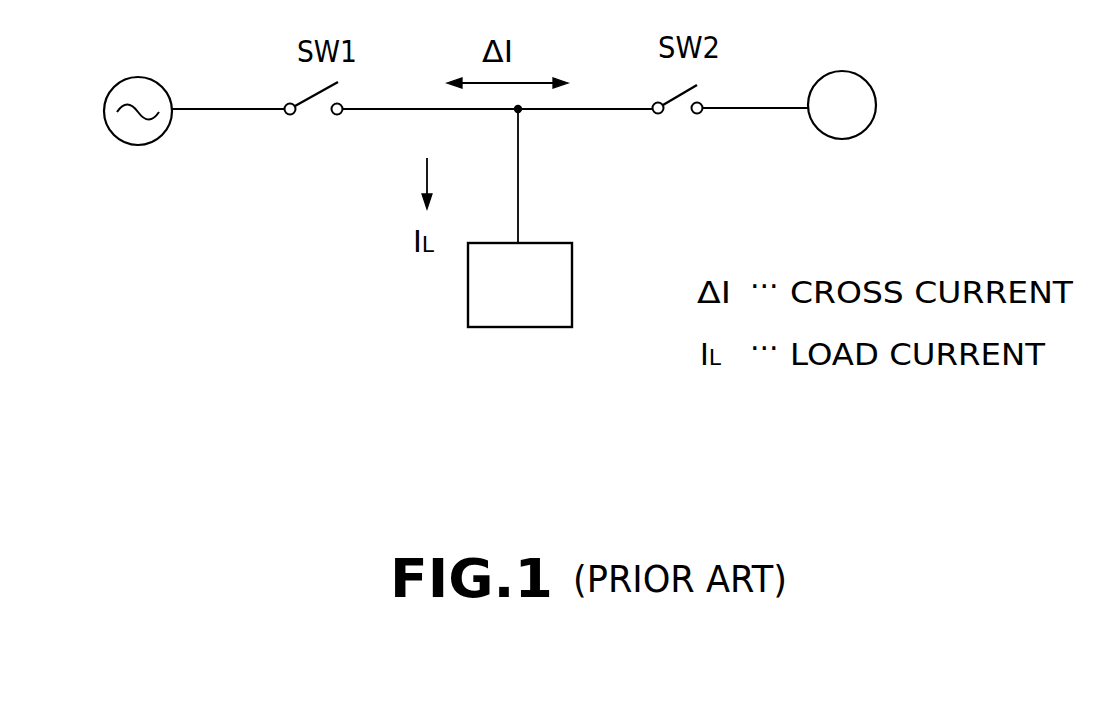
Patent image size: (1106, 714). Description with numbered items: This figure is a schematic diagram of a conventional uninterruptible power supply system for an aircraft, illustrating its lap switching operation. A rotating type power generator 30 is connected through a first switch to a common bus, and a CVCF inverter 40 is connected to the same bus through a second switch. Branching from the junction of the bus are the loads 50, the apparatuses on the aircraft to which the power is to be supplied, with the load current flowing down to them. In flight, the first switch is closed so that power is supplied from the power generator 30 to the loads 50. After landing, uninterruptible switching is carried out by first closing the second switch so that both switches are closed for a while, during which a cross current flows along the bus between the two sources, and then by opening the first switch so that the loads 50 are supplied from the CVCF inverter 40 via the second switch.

The rotating type power generator 30 is at (152, 144).
The CVCF inverter 40 is at (870, 126).
The loads 50 is at (497, 328).